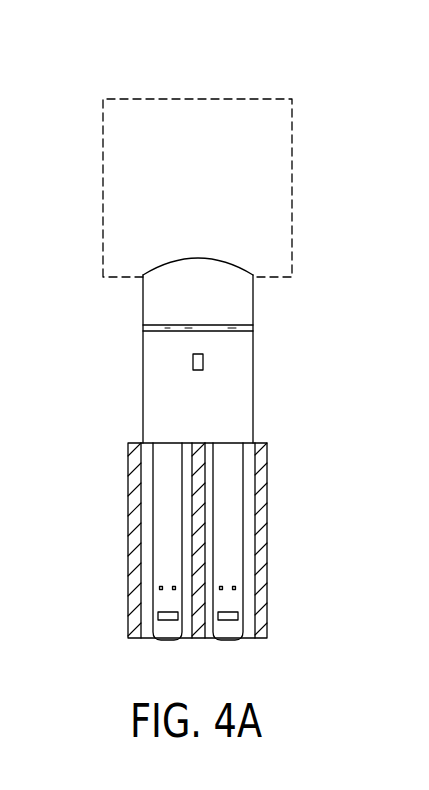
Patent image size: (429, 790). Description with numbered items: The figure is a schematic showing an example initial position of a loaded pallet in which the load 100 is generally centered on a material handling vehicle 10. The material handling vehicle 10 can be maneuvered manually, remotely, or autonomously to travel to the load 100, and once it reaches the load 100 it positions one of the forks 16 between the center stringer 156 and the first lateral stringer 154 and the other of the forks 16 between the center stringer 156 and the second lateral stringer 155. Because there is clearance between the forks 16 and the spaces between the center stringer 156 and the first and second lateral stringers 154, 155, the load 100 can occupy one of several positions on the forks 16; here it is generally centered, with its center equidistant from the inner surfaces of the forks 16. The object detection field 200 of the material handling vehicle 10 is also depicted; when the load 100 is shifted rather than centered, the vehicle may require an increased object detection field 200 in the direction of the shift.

The material handling vehicle 10 is at (192, 84).
The object detection field 200 is at (293, 186).
The load 100 is at (273, 530).
The first lateral stringer 154 is at (134, 461).
The second lateral stringer 155 is at (264, 597).
The center stringer 156 is at (199, 477).
The forks 16 is at (230, 640).